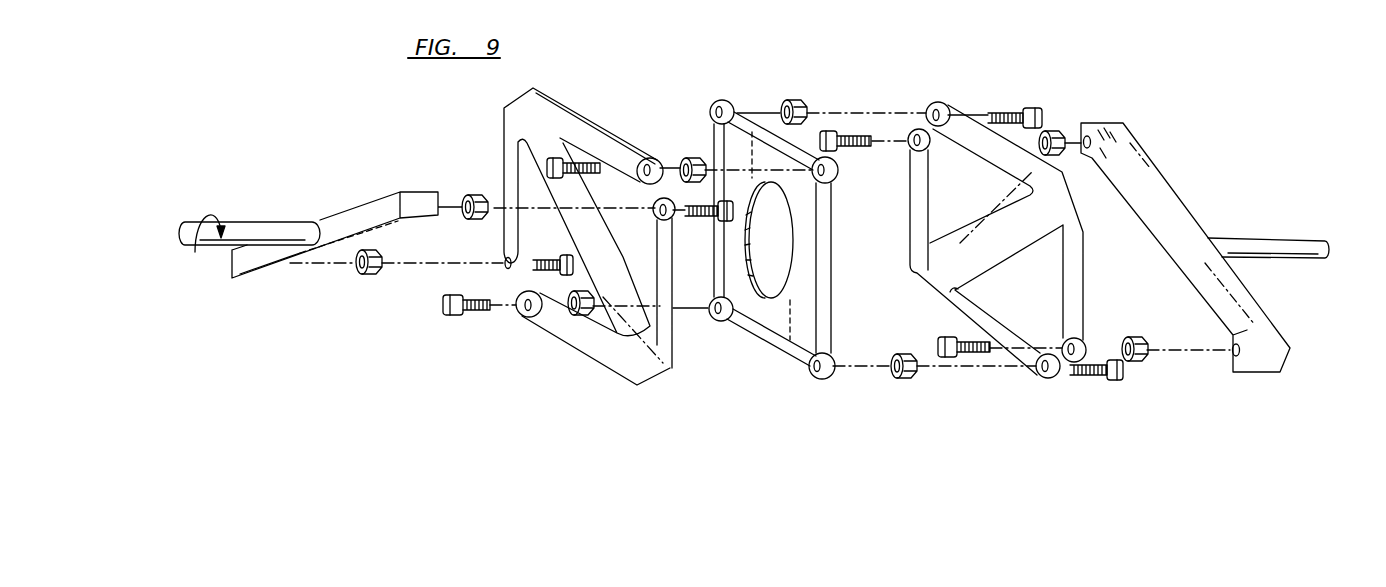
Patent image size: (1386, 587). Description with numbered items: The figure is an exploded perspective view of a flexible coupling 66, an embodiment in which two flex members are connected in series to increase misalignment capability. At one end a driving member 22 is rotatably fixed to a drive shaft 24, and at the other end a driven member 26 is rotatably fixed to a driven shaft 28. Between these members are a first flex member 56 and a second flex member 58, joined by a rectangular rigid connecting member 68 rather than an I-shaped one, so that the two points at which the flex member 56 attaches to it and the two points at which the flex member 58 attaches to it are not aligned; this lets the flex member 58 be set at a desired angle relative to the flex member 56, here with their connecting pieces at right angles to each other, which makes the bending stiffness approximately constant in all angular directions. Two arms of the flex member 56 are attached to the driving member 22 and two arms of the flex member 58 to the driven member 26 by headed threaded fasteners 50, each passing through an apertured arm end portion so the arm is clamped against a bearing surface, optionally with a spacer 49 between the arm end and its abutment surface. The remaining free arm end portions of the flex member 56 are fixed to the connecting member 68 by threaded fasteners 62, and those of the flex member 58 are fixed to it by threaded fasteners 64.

The driving member 22 is at (364, 210).
The drive shaft 24 is at (270, 226).
The driven member 26 is at (1159, 181).
The driven shaft 28 is at (1267, 239).
The spacer 49 is at (476, 193).
The headed threaded fastener 50 is at (563, 253).
The flex member 56 is at (574, 122).
The flex member 58 is at (1074, 256).
The threaded fasteners 62 is at (444, 306).
The threaded fasteners 64 is at (1034, 107).
The coupling 66 is at (858, 96).
The rectangular rigid connecting member 68 is at (814, 228).